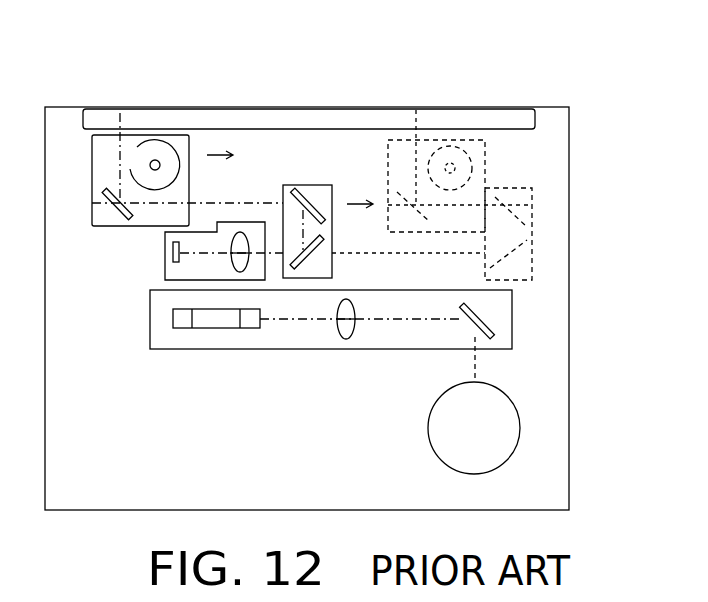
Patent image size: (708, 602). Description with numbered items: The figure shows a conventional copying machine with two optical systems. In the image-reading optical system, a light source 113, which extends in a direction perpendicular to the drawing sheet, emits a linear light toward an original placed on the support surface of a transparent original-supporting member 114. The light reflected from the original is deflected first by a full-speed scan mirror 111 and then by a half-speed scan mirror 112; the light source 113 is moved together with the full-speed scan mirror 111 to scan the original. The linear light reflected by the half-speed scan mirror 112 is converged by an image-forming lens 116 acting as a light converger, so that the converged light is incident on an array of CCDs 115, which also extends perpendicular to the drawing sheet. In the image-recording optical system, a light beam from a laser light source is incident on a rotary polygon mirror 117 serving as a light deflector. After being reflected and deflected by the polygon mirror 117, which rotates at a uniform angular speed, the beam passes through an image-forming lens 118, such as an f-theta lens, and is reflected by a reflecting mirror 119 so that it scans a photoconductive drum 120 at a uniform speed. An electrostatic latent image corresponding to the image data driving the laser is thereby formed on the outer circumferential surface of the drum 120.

The full-speed scan mirror 111 is at (115, 227).
The half-speed scan mirror 112 is at (306, 193).
The light source 113 is at (175, 150).
The transparent original-supporting member 114 is at (535, 124).
The array of CCDs 115 is at (168, 250).
The image-forming lens 116 is at (245, 232).
The rotary polygon mirror 117 is at (215, 329).
The image-forming lens 118 is at (335, 338).
The reflecting mirror 119 is at (485, 312).
The photoconductive drum 120 is at (429, 417).